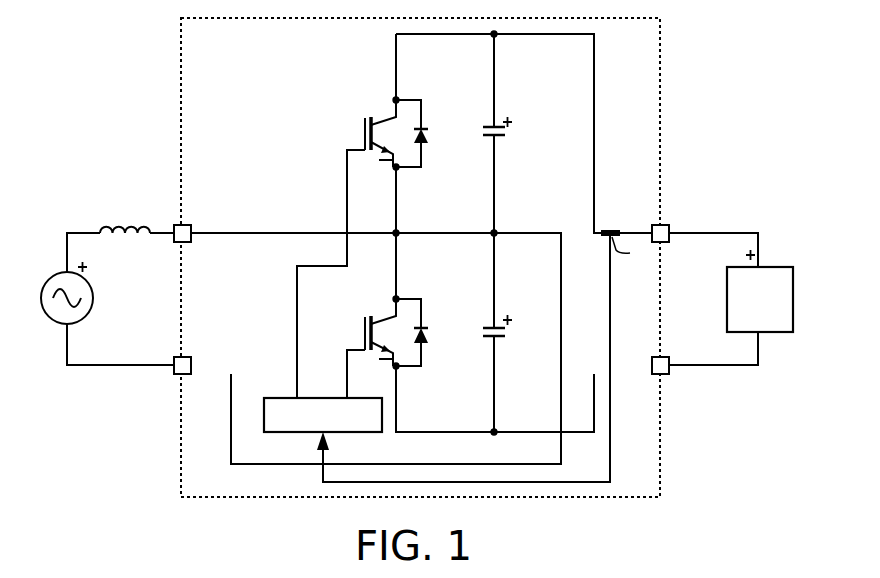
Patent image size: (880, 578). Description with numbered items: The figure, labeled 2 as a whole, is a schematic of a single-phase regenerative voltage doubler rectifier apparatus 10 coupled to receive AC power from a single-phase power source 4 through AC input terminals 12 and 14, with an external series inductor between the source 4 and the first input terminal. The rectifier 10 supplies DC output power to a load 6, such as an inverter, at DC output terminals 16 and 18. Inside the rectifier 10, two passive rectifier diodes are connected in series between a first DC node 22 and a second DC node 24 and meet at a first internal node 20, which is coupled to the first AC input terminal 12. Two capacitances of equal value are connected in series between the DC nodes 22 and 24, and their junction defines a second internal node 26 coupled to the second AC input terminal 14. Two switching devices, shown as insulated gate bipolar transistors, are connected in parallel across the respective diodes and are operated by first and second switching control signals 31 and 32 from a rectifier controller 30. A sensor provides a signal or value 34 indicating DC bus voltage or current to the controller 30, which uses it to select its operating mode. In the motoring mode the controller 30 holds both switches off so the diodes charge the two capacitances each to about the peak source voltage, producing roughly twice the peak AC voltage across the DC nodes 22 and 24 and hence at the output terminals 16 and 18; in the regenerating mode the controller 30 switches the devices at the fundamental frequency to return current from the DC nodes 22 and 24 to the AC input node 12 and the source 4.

The power conversion system 2 is at (93, 46).
The single-phase power source 4 is at (58, 277).
The load 6 is at (777, 267).
The regenerative voltage doubler rectifier apparatus 10 is at (181, 52).
The first AC input terminal 12 is at (191, 224).
The second AC input terminal 14 is at (191, 357).
The first DC output terminal 16 is at (653, 224).
The second DC output terminal 18 is at (653, 357).
The first internal node 20 is at (396, 216).
The first DC node 22 is at (396, 51).
The second DC node 24 is at (398, 414).
The second internal node 26 is at (494, 217).
The rectifier controller 30 is at (281, 398).
The first switching control signal 31 is at (297, 335).
The second switching control signal 32 is at (347, 368).
The sensor signal or value 34 is at (610, 268).